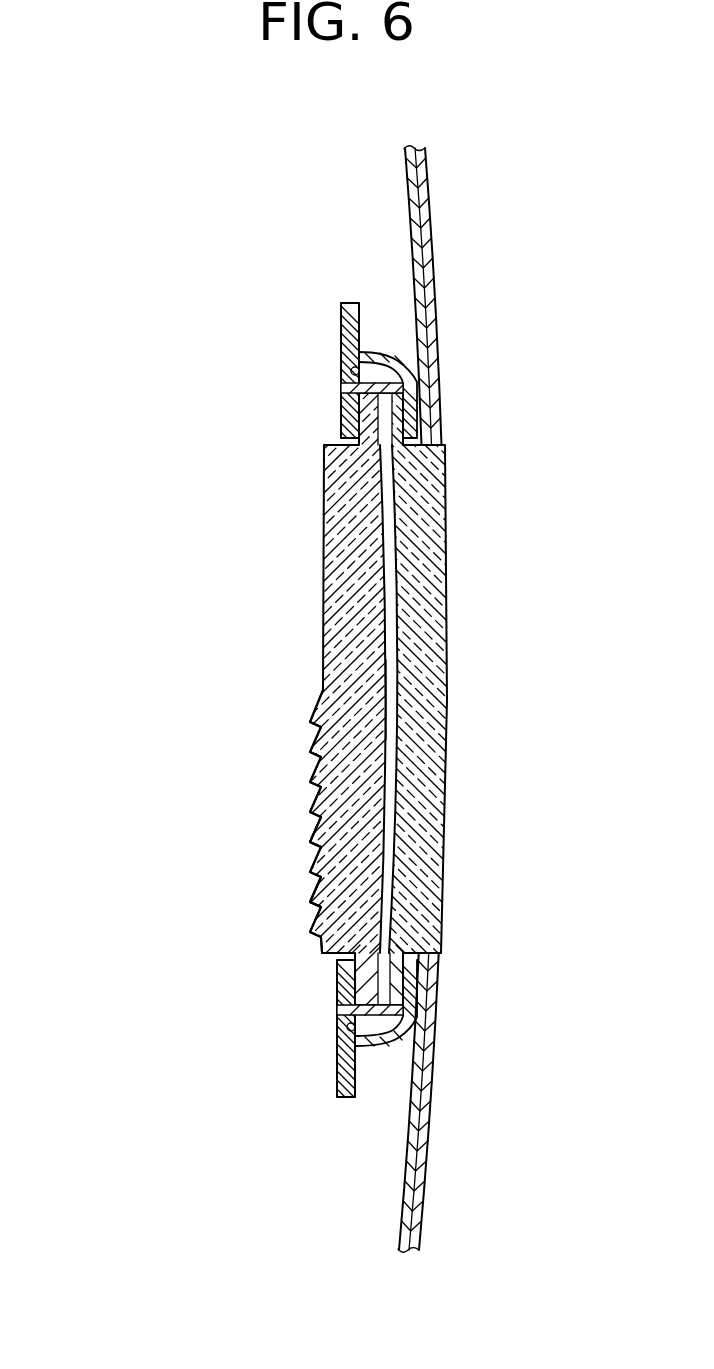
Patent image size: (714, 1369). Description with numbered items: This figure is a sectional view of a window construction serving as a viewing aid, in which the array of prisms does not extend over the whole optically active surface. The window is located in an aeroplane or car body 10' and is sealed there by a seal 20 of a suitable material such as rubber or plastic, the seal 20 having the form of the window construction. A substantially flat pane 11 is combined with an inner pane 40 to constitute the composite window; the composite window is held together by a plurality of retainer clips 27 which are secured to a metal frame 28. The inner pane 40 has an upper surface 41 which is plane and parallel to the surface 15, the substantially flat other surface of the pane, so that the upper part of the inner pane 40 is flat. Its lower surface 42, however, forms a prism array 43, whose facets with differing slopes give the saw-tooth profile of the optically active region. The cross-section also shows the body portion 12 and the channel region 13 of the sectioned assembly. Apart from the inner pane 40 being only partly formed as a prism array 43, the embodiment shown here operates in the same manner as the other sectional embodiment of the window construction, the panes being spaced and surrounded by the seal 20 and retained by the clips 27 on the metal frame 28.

The aeroplane or car body 10' is at (487, 699).
The substantially flat pane 11 is at (427, 673).
The profile body 12 is at (446, 542).
The channel 13 is at (393, 692).
The other surface of the pane 15 is at (390, 655).
The seal 20 is at (405, 365).
The retainer clip 27 is at (343, 360).
The metal frame 28 is at (340, 387).
The inner pane 40 is at (323, 757).
The upper surface 41 is at (323, 527).
The lower surface 42 is at (323, 840).
The prism array 43 is at (323, 893).